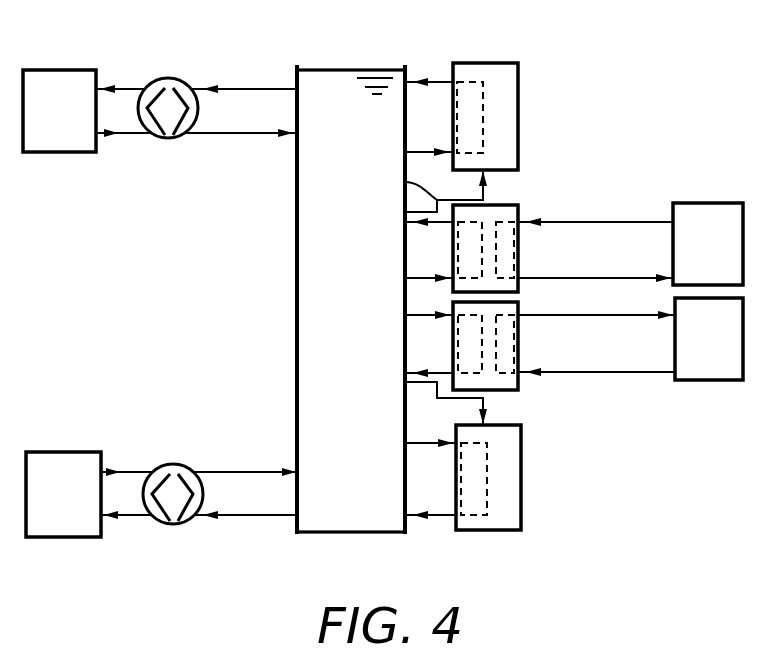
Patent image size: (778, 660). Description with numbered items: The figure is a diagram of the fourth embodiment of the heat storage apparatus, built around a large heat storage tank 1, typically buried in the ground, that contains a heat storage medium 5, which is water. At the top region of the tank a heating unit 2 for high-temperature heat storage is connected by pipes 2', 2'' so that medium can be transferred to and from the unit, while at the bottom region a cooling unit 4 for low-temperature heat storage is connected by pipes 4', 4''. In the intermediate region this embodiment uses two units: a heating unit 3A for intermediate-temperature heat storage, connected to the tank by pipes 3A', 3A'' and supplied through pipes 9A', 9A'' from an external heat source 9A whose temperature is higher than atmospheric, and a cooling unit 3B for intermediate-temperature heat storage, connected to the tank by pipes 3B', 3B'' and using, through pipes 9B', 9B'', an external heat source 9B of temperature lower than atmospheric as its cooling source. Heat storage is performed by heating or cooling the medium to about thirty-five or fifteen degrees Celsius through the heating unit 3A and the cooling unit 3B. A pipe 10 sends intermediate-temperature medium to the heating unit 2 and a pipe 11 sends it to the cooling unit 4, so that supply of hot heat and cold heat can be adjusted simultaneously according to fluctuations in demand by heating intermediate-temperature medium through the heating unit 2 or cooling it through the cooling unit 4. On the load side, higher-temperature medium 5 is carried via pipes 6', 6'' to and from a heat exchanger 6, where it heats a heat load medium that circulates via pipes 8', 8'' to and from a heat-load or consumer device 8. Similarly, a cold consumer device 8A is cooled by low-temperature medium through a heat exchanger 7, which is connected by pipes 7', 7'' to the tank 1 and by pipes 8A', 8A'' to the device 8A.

The heat storage tank 1 is at (352, 533).
The heating unit 2 is at (502, 102).
The pipe 2' is at (429, 129).
The pipe 2'' is at (429, 59).
The heating unit 3A is at (520, 230).
The pipe 3A' is at (406, 279).
The pipe 3A'' is at (406, 230).
The cooling unit 3B is at (516, 370).
The pipe 3B' is at (406, 333).
The pipe 3B'' is at (406, 372).
The cooling unit 4 is at (509, 477).
The pipe 4' is at (418, 469).
The pipe 4'' is at (442, 548).
The heat storage medium 5 is at (342, 108).
The heat exchanger 6 is at (168, 141).
The pipe 6' is at (230, 63).
The pipe 6'' is at (262, 166).
The heat exchanger 7 is at (173, 465).
The pipe 7' is at (230, 548).
The pipe 7'' is at (260, 442).
The consumer device 8 is at (59, 138).
The pipe 8' is at (196, 166).
The pipe 8'' is at (196, 63).
The cold consumer device 8A is at (63, 467).
The pipe 8A' is at (198, 442).
The pipe 8A'' is at (199, 548).
The external heat source 9A is at (717, 227).
The pipe 9A' is at (595, 194).
The pipe 9A'' is at (595, 258).
The external heat source 9B is at (716, 379).
The pipe 9B' is at (596, 352).
The pipe 9B'' is at (596, 334).
The pipe 10 is at (405, 182).
The pipe 11 is at (437, 388).